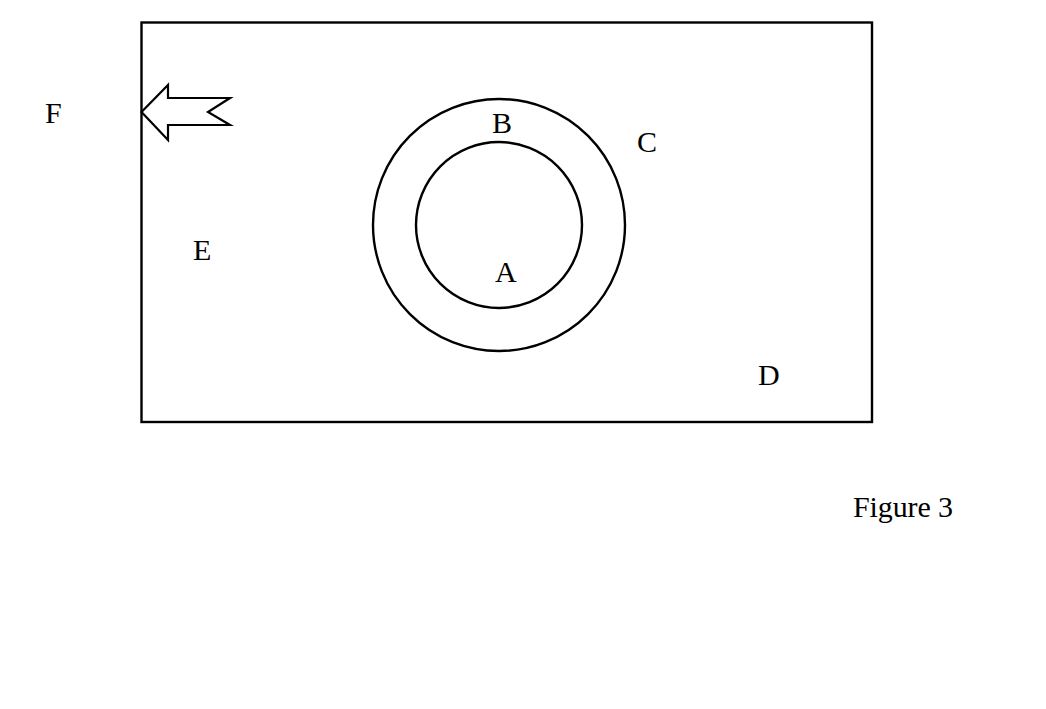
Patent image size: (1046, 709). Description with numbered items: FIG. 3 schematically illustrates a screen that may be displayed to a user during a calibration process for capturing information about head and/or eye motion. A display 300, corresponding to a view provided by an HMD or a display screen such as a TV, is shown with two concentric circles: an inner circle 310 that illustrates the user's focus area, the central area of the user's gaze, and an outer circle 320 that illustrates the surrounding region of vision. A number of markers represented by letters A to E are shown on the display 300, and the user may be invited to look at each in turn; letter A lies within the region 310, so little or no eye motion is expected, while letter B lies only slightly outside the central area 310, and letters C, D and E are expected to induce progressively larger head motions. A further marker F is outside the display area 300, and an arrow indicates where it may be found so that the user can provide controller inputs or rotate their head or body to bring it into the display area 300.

The display 300 is at (473, 263).
The focus area circle 310 is at (499, 225).
The surrounding region of vision circle 320 is at (499, 225).